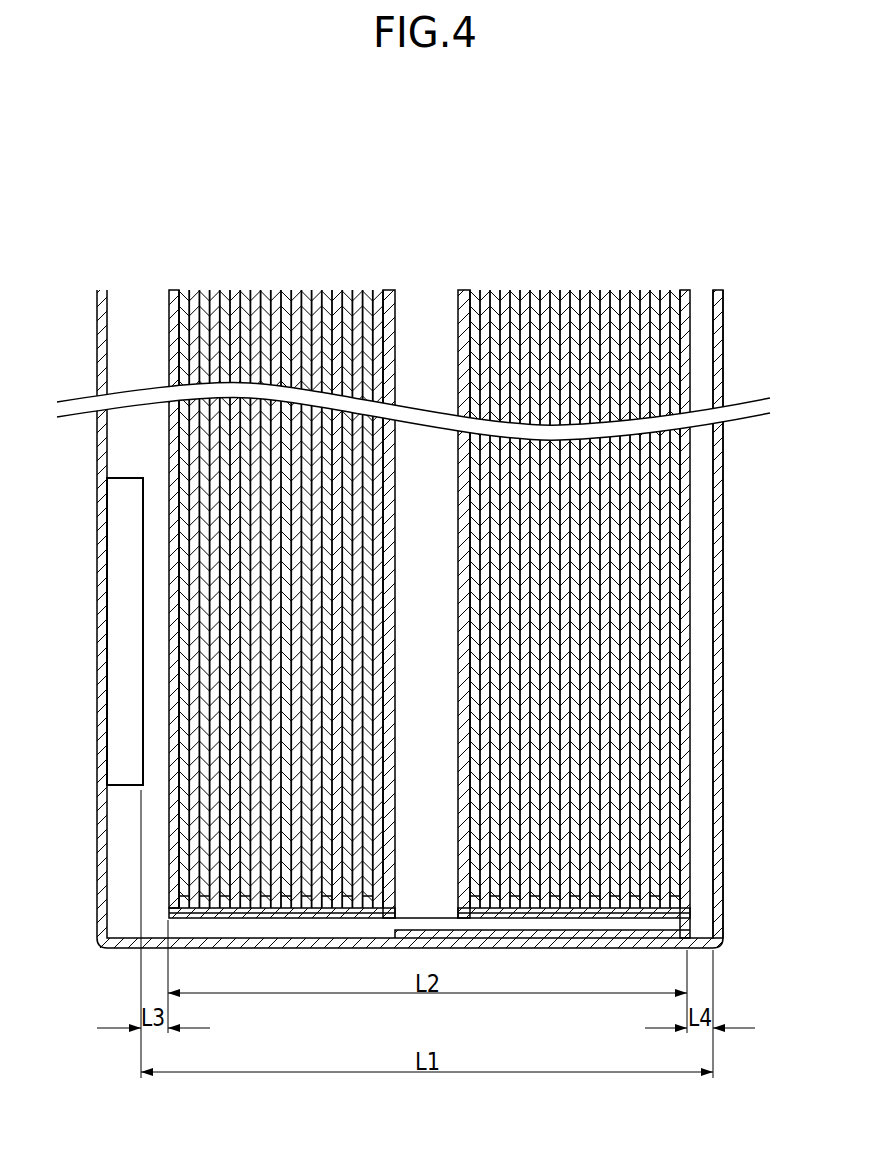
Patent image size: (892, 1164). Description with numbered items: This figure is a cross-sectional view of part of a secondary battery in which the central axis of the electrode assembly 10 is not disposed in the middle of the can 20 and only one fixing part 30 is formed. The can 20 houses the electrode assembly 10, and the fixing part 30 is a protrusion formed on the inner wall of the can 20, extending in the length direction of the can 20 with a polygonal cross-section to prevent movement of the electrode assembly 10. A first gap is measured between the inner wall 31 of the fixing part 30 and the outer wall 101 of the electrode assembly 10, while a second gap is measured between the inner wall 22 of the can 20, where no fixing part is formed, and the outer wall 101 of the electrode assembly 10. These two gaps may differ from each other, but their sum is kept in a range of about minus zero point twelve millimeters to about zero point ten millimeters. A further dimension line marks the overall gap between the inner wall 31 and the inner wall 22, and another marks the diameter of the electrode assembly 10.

The electrode assembly 10 is at (446, 591).
The outer wall of the electrode assembly 101 is at (170, 323).
The can 20 is at (716, 627).
The inner wall of the can 22 is at (716, 520).
The fixing part 30 is at (121, 633).
The inner wall of the fixing part 31 is at (141, 530).